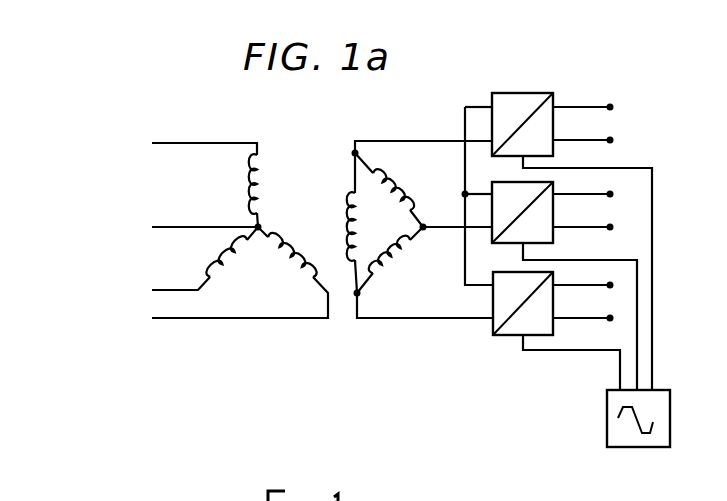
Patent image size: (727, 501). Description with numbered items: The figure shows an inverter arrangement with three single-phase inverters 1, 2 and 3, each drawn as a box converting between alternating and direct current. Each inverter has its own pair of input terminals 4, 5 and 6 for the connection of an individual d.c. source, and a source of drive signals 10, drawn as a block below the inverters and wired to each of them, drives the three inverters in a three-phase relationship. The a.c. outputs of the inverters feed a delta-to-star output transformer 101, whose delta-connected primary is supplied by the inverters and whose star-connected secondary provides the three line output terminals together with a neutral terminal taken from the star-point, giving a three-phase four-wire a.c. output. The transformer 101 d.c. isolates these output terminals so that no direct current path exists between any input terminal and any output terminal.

The delta-to-star output transformer 101 is at (322, 193).
The single-phase inverter 1 is at (501, 80).
The single-phase inverter 2 is at (501, 177).
The single-phase inverter 3 is at (501, 267).
The input terminals 4 is at (606, 137).
The input terminals 5 is at (606, 224).
The input terminals 6 is at (606, 315).
The source of drive signals 10 is at (643, 452).